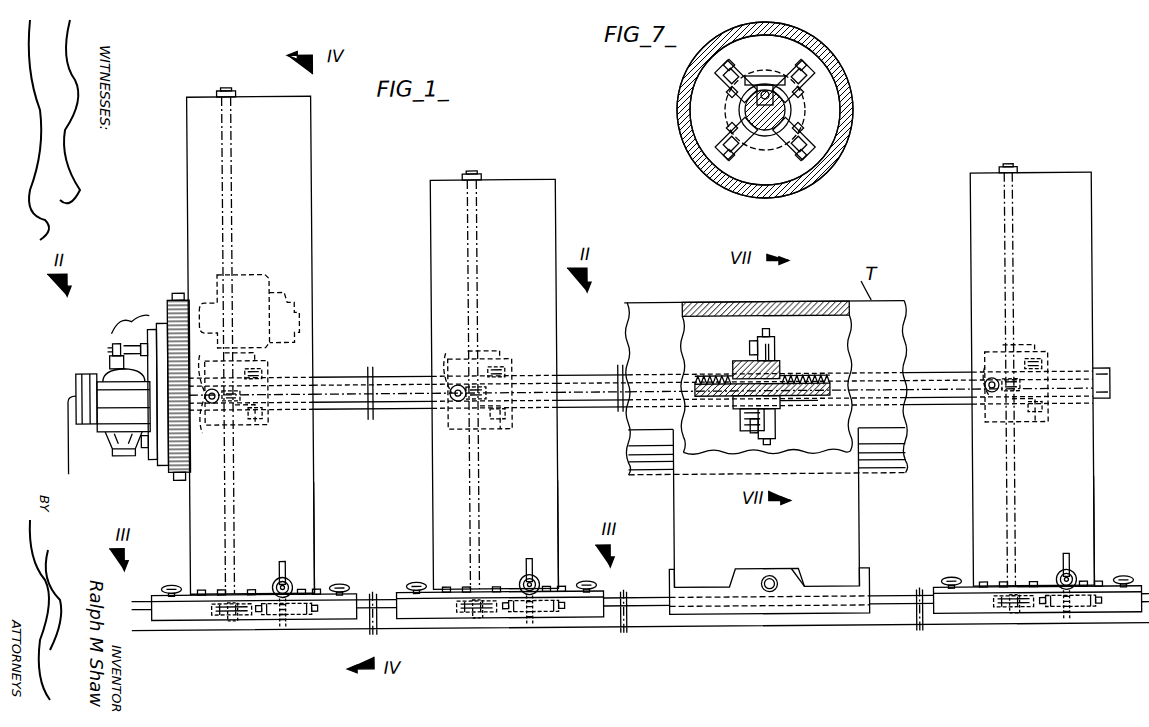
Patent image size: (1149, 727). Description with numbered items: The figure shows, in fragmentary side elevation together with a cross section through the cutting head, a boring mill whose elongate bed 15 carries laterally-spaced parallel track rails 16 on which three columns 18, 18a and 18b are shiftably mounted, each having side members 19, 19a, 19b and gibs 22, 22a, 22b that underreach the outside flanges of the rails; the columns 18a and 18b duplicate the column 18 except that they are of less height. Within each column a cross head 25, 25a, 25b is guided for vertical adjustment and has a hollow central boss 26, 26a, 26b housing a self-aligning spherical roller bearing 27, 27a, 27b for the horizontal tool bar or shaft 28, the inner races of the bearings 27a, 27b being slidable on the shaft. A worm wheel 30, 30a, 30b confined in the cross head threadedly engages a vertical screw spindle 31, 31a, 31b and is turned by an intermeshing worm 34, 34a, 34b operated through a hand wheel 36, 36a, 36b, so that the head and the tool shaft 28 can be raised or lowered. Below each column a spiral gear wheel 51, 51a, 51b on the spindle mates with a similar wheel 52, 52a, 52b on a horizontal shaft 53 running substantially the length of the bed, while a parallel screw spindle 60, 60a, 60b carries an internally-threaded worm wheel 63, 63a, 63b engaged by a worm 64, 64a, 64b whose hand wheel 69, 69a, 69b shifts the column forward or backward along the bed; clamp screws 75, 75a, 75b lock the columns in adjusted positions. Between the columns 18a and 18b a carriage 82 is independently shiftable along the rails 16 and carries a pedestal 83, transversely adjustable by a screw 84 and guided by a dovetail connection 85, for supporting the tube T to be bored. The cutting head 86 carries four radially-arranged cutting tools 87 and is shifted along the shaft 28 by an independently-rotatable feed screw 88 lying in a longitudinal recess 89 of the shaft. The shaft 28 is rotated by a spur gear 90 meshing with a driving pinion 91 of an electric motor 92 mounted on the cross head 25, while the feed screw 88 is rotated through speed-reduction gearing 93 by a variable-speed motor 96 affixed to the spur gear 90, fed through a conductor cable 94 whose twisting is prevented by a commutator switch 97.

In FIG. 1, the bed 15 is at (598, 640).
In FIG. 1, the track rails 16 is at (917, 636).
In FIG. 1, the column 18 is at (160, 268).
In FIG. 1, the column 18a is at (426, 182).
In FIG. 1, the column 18b is at (962, 178).
In FIG. 1, the side members 19 is at (313, 505).
In FIG. 1, the side members 19a is at (548, 501).
In FIG. 1, the side members 19b is at (1090, 490).
In FIG. 1, the gibs 22 is at (175, 611).
In FIG. 1, the gibs 22a is at (420, 611).
In FIG. 1, the gibs 22b is at (958, 610).
In FIG. 1, the cross head 25 is at (279, 398).
In FIG. 1, the cross head 25a is at (522, 398).
In FIG. 1, the cross head 25b is at (1060, 394).
In FIG. 1, the hollow central boss 26 is at (250, 358).
In FIG. 1, the hollow central boss 26a is at (500, 358).
In FIG. 1, the hollow central boss 26b is at (1035, 355).
In FIG. 1, the self-aligning spherical roller bearing 27 is at (264, 370).
In FIG. 1, the self-aligning spherical roller bearing 27a is at (507, 370).
In FIG. 1, the self-aligning spherical roller bearing 27b is at (1044, 366).
In FIG. 1, the tool bar or shaft 28 is at (352, 378).
In FIG. 7, the tool bar or shaft 28 is at (766, 131).
In FIG. 1, the worm wheel 30 is at (238, 402).
In FIG. 1, the worm wheel 30a is at (470, 402).
In FIG. 1, the worm wheel 30b is at (1004, 398).
In FIG. 1, the vertical screw spindle 31 is at (233, 178).
In FIG. 1, the vertical screw spindle 31a is at (478, 252).
In FIG. 1, the vertical screw spindle 31b is at (1014, 244).
In FIG. 1, the worm 34 is at (214, 400).
In FIG. 1, the worm 34a is at (450, 398).
In FIG. 1, the worm 34b is at (988, 396).
In FIG. 1, the hand wheel 36 is at (203, 384).
In FIG. 1, the hand wheel 36a is at (449, 362).
In FIG. 1, the hand wheel 36b is at (984, 392).
In FIG. 1, the spiral gear wheel 51 is at (236, 614).
In FIG. 1, the spiral gear wheel 51a is at (470, 614).
In FIG. 1, the spiral gear wheel 51b is at (1010, 613).
In FIG. 1, the spiral gear wheel 52 is at (225, 614).
In FIG. 1, the spiral gear wheel 52a is at (478, 614).
In FIG. 1, the spiral gear wheel 52b is at (1020, 613).
In FIG. 1, the horizontal shaft 53 is at (202, 587).
In FIG. 1, the screw spindle 60 is at (308, 614).
In FIG. 1, the screw spindle 60a is at (555, 614).
In FIG. 1, the screw spindle 60b is at (1092, 613).
In FIG. 1, the worm wheel 63 is at (281, 617).
In FIG. 1, the worm wheel 63a is at (528, 617).
In FIG. 1, the worm wheel 63b is at (1065, 616).
In FIG. 1, the worm 64 is at (278, 575).
In FIG. 1, the worm 64a is at (525, 575).
In FIG. 1, the worm 64b is at (1062, 575).
In FIG. 1, the hand wheel 69 is at (290, 580).
In FIG. 1, the hand wheel 69a is at (537, 579).
In FIG. 1, the hand wheel 69b is at (1073, 578).
In FIG. 1, the clamp screws 75 is at (170, 580).
In FIG. 1, the clamp screws 75a is at (415, 579).
In FIG. 1, the clamp screws 75b is at (950, 578).
In FIG. 1, the carriage 82 is at (868, 590).
In FIG. 1, the pedestal 83 is at (878, 500).
In FIG. 1, the screw 84 is at (762, 579).
In FIG. 1, the dovetail guide connection 85 is at (790, 570).
In FIG. 1, the head 86 is at (740, 418).
In FIG. 7, the head 86 is at (742, 110).
In FIG. 1, the cutting tools 87 is at (758, 334).
In FIG. 7, the cutting tools 87 is at (700, 86).
In FIG. 1, the feed screw 88 is at (408, 378).
In FIG. 7, the feed screw 88 is at (766, 76).
In FIG. 1, the longitudinal recess 89 is at (816, 398).
In FIG. 1, the spur gear 90 is at (178, 477).
In FIG. 1, the driving pinion 91 is at (165, 376).
In FIG. 1, the electric motor 92 is at (268, 272).
In FIG. 1, the speed-reduction gearing 93 is at (124, 324).
In FIG. 1, the conductor cable 94 is at (60, 432).
In FIG. 1, the variable-speed electric motor 96 is at (122, 446).
In FIG. 1, the commutator switch 97 is at (80, 368).
In FIG. 7, the tube T is at (855, 108).